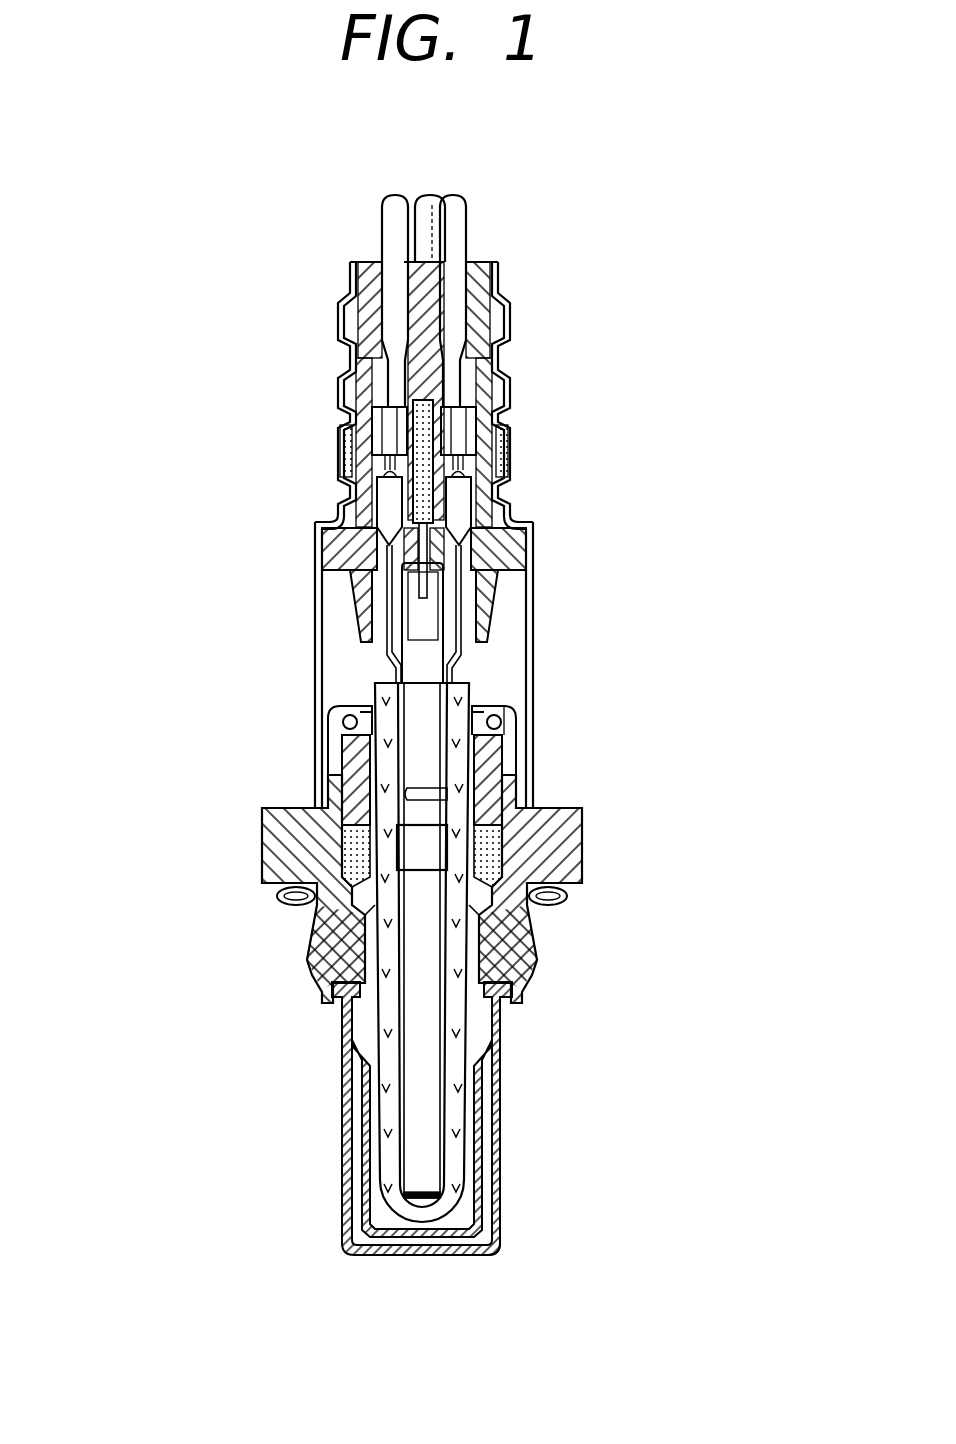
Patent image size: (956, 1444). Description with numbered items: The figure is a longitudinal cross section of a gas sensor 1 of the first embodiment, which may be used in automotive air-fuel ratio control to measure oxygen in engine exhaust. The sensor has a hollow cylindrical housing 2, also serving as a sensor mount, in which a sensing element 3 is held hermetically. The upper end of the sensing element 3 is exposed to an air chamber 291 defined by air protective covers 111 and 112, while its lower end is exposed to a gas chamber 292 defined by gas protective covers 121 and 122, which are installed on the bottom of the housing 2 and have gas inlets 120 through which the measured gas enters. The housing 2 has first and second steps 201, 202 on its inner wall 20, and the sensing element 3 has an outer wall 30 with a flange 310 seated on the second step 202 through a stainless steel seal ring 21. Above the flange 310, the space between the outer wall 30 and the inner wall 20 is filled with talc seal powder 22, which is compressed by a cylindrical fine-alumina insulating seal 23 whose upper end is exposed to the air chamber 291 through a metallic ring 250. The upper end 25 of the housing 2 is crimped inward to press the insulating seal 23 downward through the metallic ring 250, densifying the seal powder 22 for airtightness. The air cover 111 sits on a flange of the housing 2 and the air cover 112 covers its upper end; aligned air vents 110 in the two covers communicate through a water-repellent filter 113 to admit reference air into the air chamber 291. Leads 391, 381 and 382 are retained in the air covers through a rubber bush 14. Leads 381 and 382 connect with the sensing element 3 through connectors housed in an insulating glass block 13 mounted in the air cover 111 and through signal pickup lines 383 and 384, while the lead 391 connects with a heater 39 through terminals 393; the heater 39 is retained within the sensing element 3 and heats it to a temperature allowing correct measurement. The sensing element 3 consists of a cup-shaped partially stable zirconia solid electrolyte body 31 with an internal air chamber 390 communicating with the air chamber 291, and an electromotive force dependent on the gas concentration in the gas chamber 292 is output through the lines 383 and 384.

The gas sensor 1 is at (150, 638).
The housing 2 is at (582, 812).
The sensing element 3 is at (462, 1135).
The insulating glass block 13 is at (325, 541).
The rubber bush 14 is at (378, 305).
The inner wall 20 is at (492, 850).
The seal ring 21 is at (322, 992).
The seal powder 22 is at (355, 845).
The insulating seal 23 is at (503, 775).
The upper end 25 is at (505, 698).
The outer wall 30 is at (481, 938).
The solid electrolyte body 31 is at (456, 1016).
The heater 39 is at (425, 1172).
The air vents 110 is at (492, 437).
The air protective cover 111 is at (533, 600).
The air protective cover 112 is at (512, 468).
The water-repellent filter 113 is at (512, 425).
The gas inlets 120 is at (502, 1078).
The gas protective cover 121 is at (496, 1218).
The gas protective cover 122 is at (496, 1252).
The first step 201 is at (336, 888).
The second step 202 is at (333, 915).
The metallic ring 250 is at (501, 722).
The air chamber 291 is at (338, 692).
The gas chamber 292 is at (380, 1242).
The flange 310 is at (563, 899).
The lead 381 is at (395, 215).
The lead 382 is at (455, 217).
The signal pickup line 383 is at (392, 645).
The signal pickup line 384 is at (458, 652).
The air chamber 390 is at (404, 1138).
The lead 391 is at (430, 194).
The terminals 393 is at (430, 547).